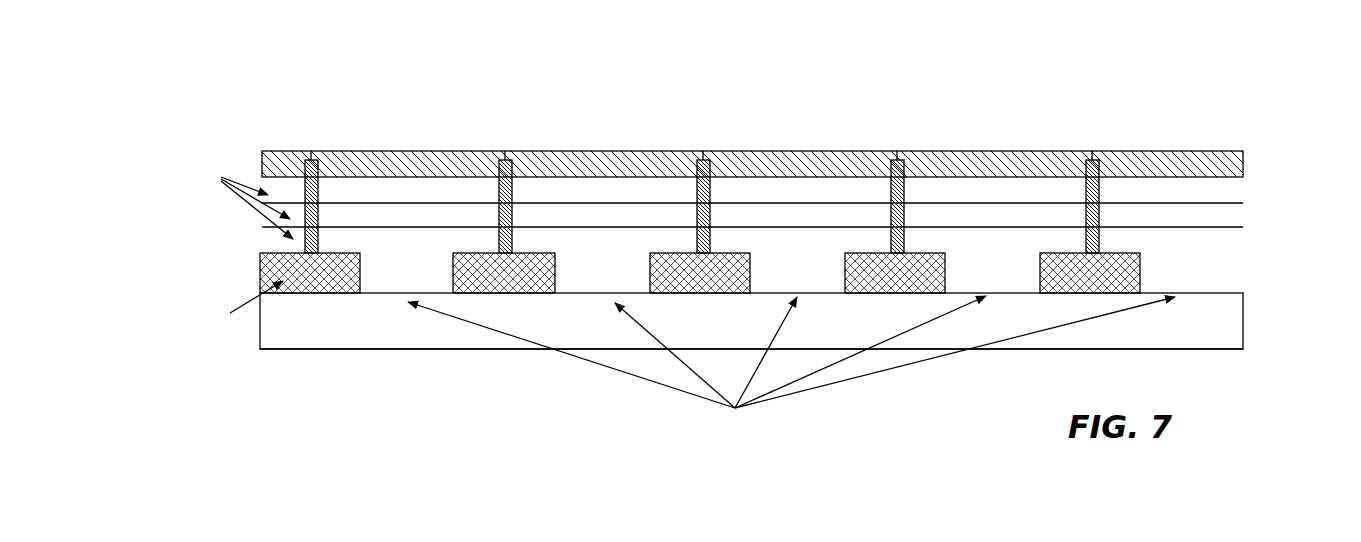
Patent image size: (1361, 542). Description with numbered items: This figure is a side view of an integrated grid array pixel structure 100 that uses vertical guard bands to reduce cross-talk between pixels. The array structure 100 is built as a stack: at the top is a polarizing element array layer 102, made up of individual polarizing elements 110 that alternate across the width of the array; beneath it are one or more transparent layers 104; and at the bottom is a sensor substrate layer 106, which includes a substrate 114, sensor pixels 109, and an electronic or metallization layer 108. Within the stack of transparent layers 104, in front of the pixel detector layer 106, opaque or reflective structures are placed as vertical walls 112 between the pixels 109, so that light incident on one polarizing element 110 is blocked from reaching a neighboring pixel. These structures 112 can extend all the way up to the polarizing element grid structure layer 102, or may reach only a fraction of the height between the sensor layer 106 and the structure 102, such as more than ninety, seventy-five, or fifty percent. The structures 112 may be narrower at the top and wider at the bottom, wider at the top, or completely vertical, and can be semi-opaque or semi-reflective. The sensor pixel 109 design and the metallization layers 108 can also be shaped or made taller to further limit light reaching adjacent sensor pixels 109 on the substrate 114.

The integrated array 100 is at (1234, 55).
The polarizing element array layer 102 is at (1263, 167).
The transparent layers 104 is at (1256, 221).
The sensor substrate layer 106 is at (1262, 307).
The electronic or metallization layer 108 is at (262, 255).
The sensor pixels 109 is at (385, 282).
The polarizing element 110 is at (447, 151).
The vertical walls 112 is at (320, 194).
The substrate 114 is at (1185, 351).